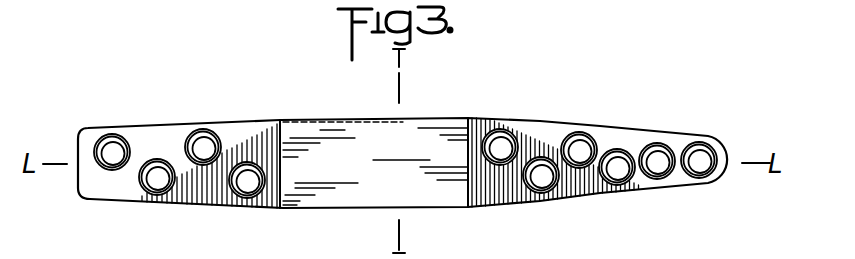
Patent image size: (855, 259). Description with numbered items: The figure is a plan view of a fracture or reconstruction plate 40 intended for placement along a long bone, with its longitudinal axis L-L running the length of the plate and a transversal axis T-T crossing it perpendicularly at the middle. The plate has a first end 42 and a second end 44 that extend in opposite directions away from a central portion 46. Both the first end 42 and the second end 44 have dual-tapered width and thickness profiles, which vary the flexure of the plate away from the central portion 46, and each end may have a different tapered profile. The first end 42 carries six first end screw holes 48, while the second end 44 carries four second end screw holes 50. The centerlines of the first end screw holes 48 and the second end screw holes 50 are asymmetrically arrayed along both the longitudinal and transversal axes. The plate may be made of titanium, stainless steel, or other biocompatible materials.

The fracture or reconstruction plate 40 is at (440, 102).
The first end 42 is at (614, 125).
The second end 44 is at (197, 123).
The central portion 46 is at (450, 208).
The first end screw holes 48 is at (501, 146).
The second end screw holes 50 is at (113, 150).